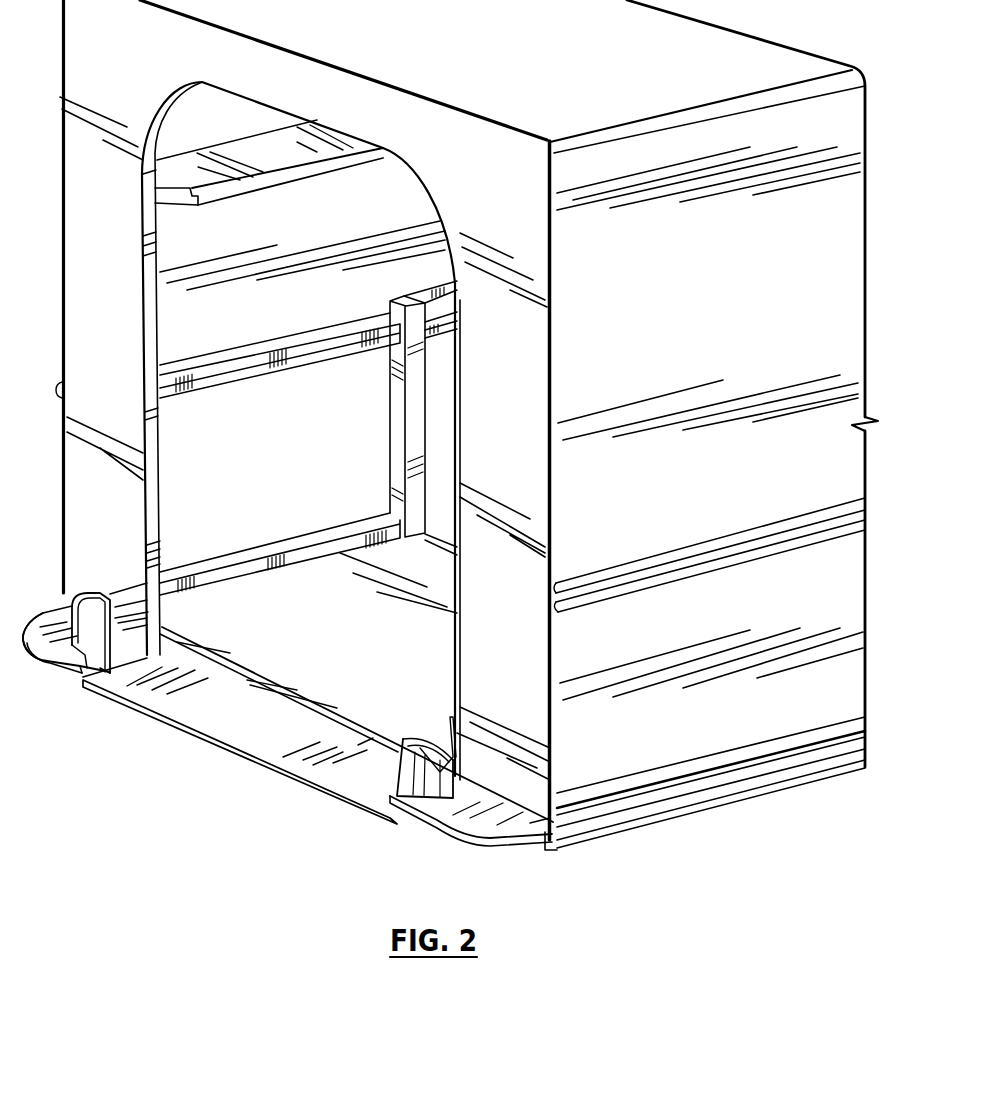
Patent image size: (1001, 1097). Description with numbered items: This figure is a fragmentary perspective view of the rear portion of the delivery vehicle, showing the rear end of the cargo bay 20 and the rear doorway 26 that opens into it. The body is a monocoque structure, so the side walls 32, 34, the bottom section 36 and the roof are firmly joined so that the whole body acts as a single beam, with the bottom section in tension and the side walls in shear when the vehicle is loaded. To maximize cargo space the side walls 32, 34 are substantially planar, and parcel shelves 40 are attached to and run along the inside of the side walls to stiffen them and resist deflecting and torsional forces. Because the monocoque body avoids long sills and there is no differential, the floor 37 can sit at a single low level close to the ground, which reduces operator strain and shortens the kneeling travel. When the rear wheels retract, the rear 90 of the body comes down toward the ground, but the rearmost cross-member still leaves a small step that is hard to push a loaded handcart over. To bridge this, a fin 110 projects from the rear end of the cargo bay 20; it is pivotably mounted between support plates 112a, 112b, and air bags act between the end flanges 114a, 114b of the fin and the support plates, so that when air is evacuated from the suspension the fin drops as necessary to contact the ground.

The cargo bay 20 is at (330, 608).
The rear doorway 26 is at (175, 512).
The side wall 32 is at (700, 461).
The side wall 34 is at (294, 472).
The bottom section 36 is at (394, 650).
The floor 37 is at (237, 623).
The parcel shelf 40 is at (241, 152).
The rear 90 is at (38, 657).
The fin 110 is at (243, 728).
The support plate 112a is at (452, 808).
The support plate 112b is at (53, 620).
The end flange 114a is at (433, 738).
The end flange 114b is at (95, 596).